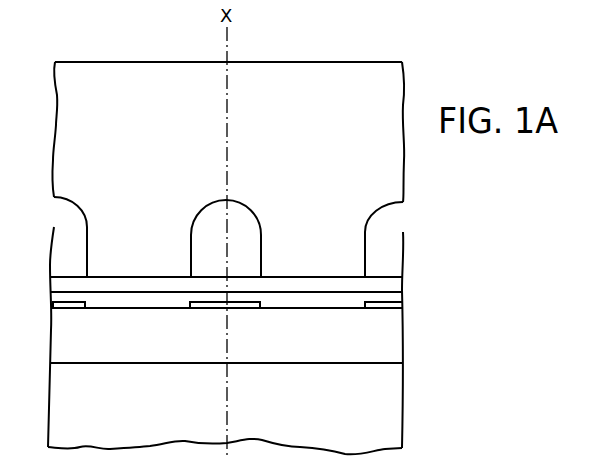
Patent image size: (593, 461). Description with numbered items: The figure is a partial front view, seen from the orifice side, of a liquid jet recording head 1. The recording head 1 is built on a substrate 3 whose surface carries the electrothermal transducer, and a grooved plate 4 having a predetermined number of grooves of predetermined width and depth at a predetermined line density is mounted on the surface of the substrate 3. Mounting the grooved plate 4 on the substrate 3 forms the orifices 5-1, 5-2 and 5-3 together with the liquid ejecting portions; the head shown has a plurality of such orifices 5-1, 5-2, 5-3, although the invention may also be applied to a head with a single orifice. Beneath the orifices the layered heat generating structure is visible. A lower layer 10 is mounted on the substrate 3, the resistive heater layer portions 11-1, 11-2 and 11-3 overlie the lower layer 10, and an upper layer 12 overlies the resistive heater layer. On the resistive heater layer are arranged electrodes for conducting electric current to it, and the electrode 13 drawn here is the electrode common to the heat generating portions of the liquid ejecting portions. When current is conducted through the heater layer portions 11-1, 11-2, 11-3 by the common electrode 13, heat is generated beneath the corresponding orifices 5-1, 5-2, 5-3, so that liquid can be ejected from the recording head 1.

The recording head 1 is at (52, 153).
The substrate 3 is at (402, 408).
The grooved plate 4 is at (368, 75).
The orifice 5-1 is at (67, 212).
The orifice 5-2 is at (239, 219).
The orifice 5-3 is at (395, 218).
The lower layer 10 is at (402, 347).
The resistive heater layer 11-1 is at (65, 308).
The resistive heater layer 11-2 is at (235, 308).
The resistive heater layer 11-3 is at (388, 308).
The upper layer 12 is at (403, 288).
The electrode 13 is at (403, 300).